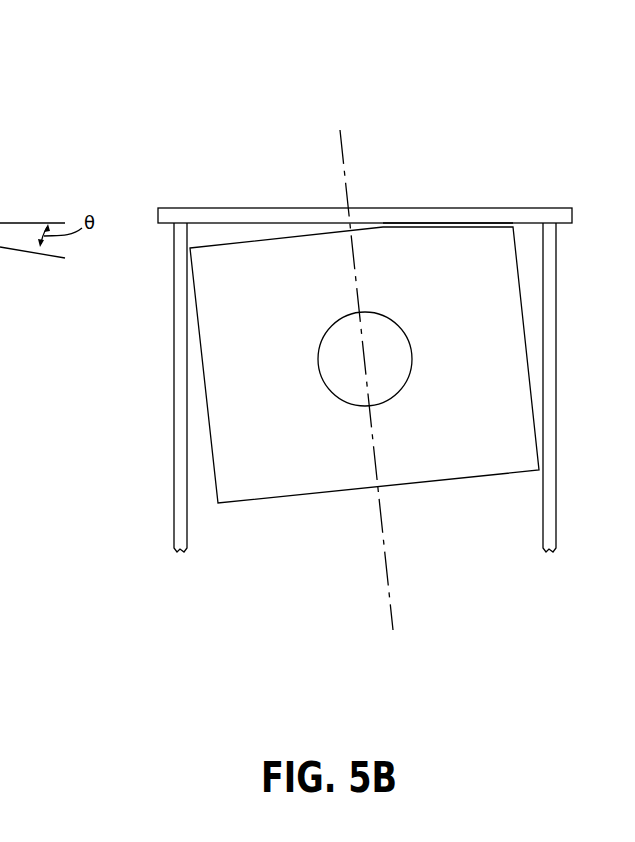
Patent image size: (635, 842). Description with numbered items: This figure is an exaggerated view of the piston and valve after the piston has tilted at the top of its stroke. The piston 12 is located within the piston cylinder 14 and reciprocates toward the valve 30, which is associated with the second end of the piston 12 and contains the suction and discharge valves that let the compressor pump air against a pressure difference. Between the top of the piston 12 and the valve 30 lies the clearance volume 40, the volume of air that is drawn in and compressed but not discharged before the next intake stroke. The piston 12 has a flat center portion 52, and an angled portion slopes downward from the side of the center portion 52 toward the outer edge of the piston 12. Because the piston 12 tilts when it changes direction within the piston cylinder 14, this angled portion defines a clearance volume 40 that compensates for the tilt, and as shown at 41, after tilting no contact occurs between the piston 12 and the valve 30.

The piston 12 is at (455, 319).
The piston cylinder 14 is at (174, 331).
The valve 30 is at (430, 207).
The clearance volume 40 is at (217, 231).
The no-contact region after tilting 41 is at (488, 218).
The center portion 52 is at (341, 143).